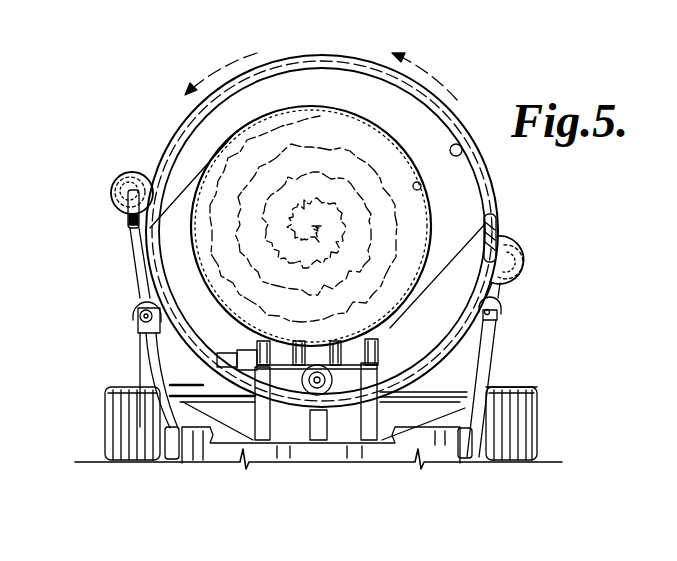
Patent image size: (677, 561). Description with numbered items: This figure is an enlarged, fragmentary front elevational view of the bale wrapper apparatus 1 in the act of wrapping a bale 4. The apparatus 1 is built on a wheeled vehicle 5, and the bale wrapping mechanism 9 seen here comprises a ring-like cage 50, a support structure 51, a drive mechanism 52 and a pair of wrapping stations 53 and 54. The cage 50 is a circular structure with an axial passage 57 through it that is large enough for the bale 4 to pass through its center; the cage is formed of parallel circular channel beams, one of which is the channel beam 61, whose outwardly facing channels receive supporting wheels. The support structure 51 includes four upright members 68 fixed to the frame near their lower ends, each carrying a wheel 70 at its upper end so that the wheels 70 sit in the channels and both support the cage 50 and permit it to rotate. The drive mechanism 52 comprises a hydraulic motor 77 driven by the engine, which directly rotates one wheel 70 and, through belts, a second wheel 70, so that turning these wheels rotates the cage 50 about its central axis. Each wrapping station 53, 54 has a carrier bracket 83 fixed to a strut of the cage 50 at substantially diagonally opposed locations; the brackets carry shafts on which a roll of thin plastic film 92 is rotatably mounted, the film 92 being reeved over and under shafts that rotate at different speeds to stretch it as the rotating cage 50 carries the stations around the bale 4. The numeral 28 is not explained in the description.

The bale wrapper apparatus 1 is at (568, 322).
The bale 4 is at (421, 185).
The wheeled vehicle 5 is at (540, 403).
The bale wrapping mechanism 9 is at (492, 194).
The wheels 28 is at (150, 428).
The cage 50 is at (302, 55).
The support structure 51 is at (488, 354).
The drive mechanism 52 is at (138, 328).
The wrapping station 53 is at (133, 238).
The wrapping station 54 is at (522, 251).
The axial passage 57 is at (463, 151).
The circular channel beam 61 is at (343, 55).
The upright member 68 is at (162, 369).
The wheel 70 is at (145, 298).
The hydraulic motor 77 is at (138, 310).
The carrier bracket 83 is at (127, 221).
The plastic film 92 is at (217, 157).